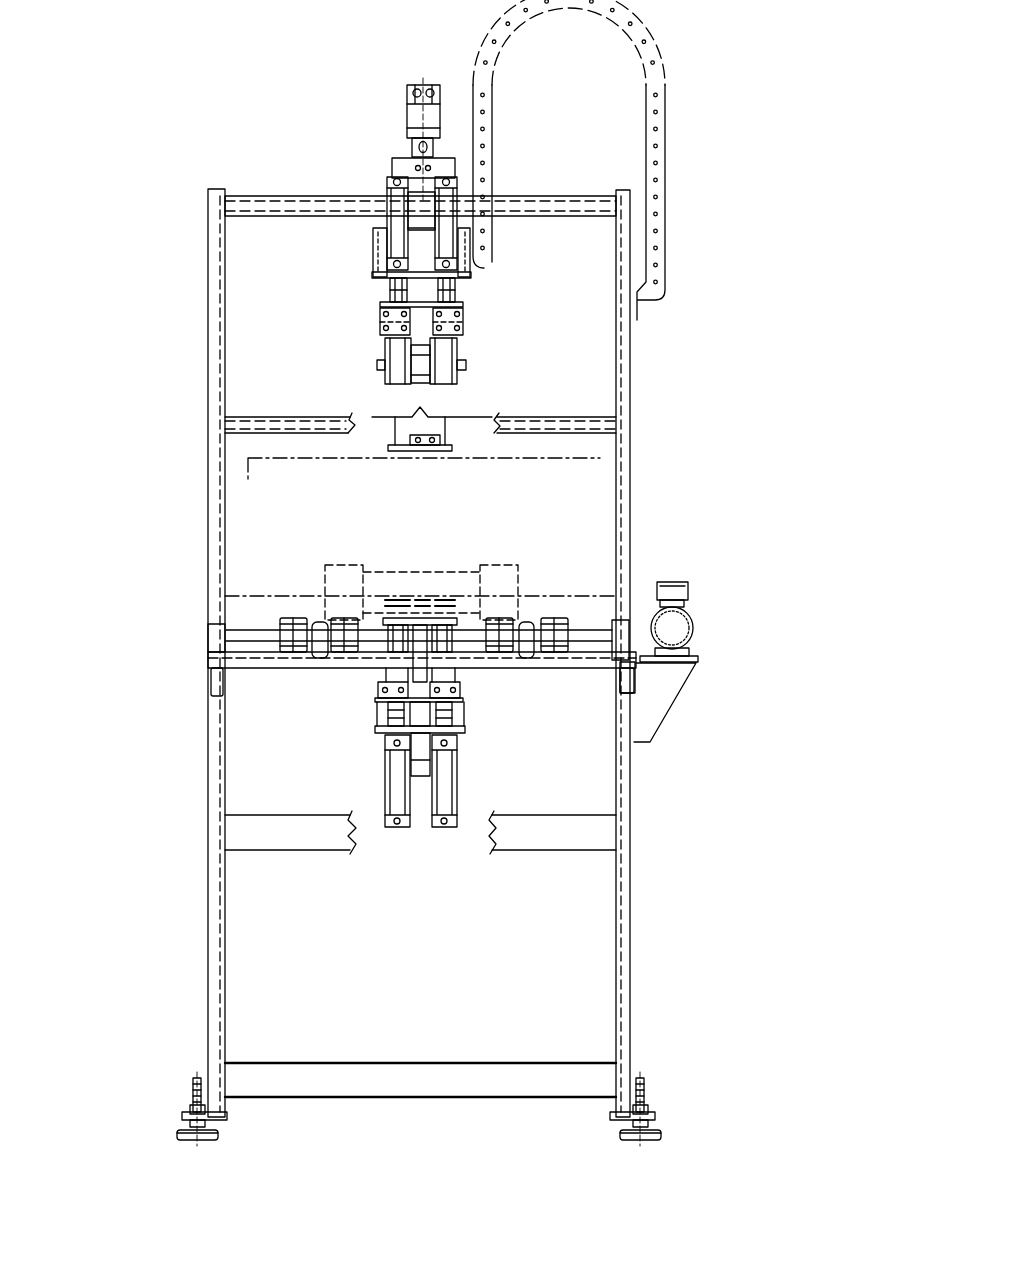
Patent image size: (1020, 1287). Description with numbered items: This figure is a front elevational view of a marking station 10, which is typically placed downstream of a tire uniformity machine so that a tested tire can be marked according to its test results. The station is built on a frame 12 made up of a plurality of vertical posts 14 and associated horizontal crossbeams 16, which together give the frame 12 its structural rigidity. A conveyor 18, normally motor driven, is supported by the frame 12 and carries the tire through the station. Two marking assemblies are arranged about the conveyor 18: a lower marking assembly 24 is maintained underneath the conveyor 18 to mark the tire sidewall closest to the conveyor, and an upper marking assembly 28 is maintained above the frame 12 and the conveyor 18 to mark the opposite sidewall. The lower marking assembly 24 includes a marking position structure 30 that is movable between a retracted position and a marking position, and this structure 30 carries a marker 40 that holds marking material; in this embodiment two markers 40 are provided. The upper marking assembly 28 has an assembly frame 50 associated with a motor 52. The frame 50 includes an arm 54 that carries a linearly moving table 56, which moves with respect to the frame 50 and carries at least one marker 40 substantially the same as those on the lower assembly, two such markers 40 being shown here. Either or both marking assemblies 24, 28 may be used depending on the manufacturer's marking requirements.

The marking station 10 is at (119, 116).
The frame 12 is at (655, 858).
The posts 14 is at (217, 955).
The crossbeams 16 is at (270, 666).
The conveyor 18 is at (420, 562).
The lower marking assembly 24 is at (478, 739).
The upper marking assembly 28 is at (373, 288).
The marking position structure 30 is at (373, 703).
The marker 40 is at (386, 378).
The assembly frame 50 is at (383, 190).
The motor 52 is at (412, 118).
The arm 54 is at (403, 135).
The linearly moving table 56 is at (432, 270).